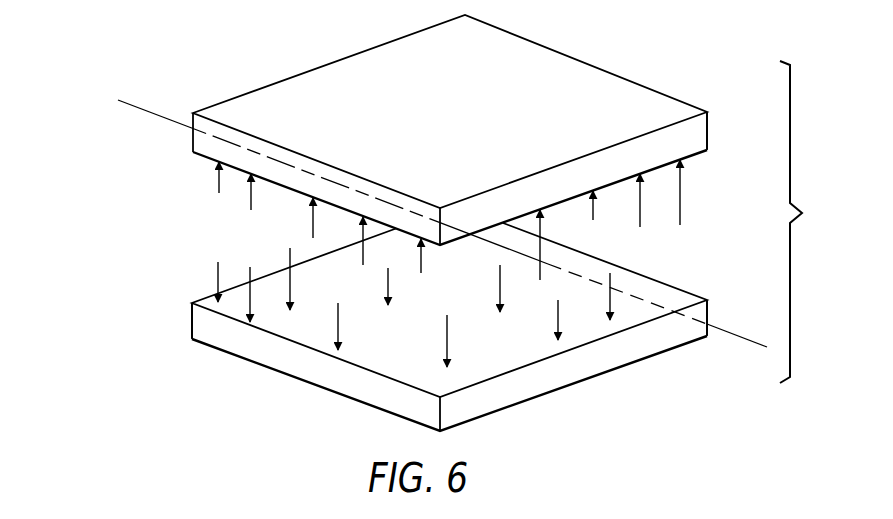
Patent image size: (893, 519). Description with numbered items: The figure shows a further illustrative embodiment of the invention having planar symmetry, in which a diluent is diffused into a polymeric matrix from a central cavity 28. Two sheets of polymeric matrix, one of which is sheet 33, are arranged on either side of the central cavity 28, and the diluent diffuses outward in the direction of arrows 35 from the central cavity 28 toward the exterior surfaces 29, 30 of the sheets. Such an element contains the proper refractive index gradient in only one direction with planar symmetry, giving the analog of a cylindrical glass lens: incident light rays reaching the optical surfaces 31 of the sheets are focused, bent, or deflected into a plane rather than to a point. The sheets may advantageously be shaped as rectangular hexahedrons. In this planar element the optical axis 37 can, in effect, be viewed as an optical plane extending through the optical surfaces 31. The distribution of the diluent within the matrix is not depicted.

The central cavity 28 is at (237, 227).
The exterior surface 29 is at (539, 51).
The exterior surface 30 is at (327, 385).
The optical surface 31 is at (694, 130).
The sheet 33 is at (205, 322).
The arrows 35 is at (660, 243).
The optical axis 37 is at (442, 204).